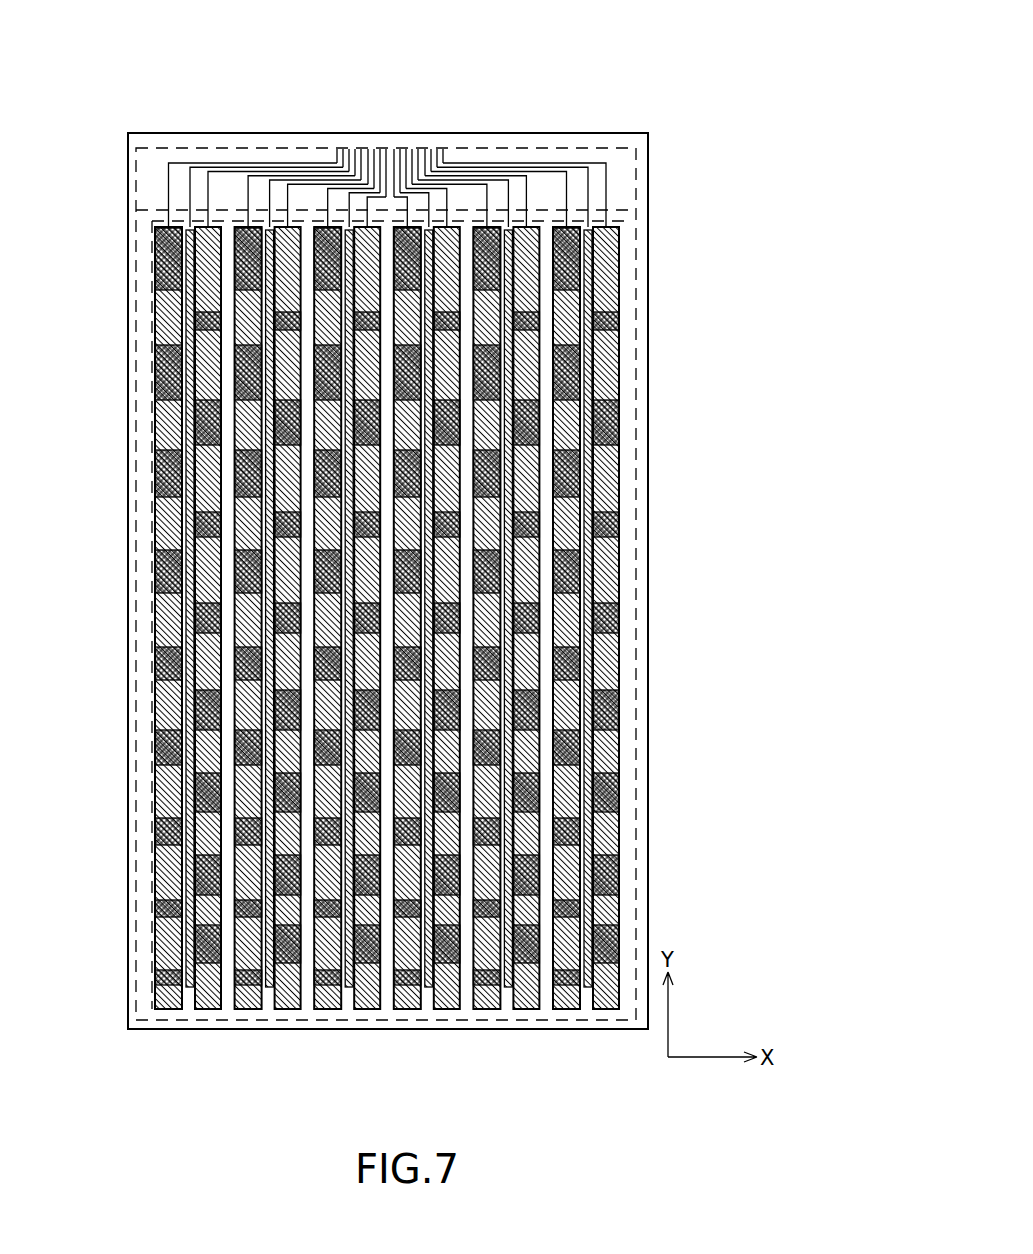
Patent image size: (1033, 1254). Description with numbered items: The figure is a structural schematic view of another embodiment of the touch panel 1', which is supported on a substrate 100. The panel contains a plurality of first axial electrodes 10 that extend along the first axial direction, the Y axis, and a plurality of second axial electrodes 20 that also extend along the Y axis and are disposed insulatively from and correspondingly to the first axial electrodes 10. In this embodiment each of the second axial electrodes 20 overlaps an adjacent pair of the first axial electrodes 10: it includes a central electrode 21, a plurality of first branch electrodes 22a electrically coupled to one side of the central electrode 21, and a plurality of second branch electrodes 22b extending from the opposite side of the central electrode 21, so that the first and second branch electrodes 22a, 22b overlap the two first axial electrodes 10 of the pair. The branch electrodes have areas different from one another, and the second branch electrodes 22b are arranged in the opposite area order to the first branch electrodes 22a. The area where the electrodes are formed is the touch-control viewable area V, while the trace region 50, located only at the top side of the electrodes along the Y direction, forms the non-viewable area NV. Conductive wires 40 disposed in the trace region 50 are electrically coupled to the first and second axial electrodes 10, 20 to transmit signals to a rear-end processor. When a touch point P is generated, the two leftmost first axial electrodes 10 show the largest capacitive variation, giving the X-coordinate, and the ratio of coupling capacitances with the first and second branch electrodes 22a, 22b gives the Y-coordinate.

The touch panel 1' is at (685, 39).
The substrate 100 is at (633, 132).
The non-viewable area NV is at (135, 179).
The viewable area V is at (136, 303).
The touch point P is at (160, 250).
The first axial electrodes 10 is at (460, 651).
The second axial electrodes 20 is at (460, 603).
The central electrode 21 is at (592, 221).
The first branch electrodes 22a is at (600, 258).
The second branch electrodes 22b is at (600, 313).
The conductive wires 40 is at (250, 171).
The trace region 50 is at (433, 146).